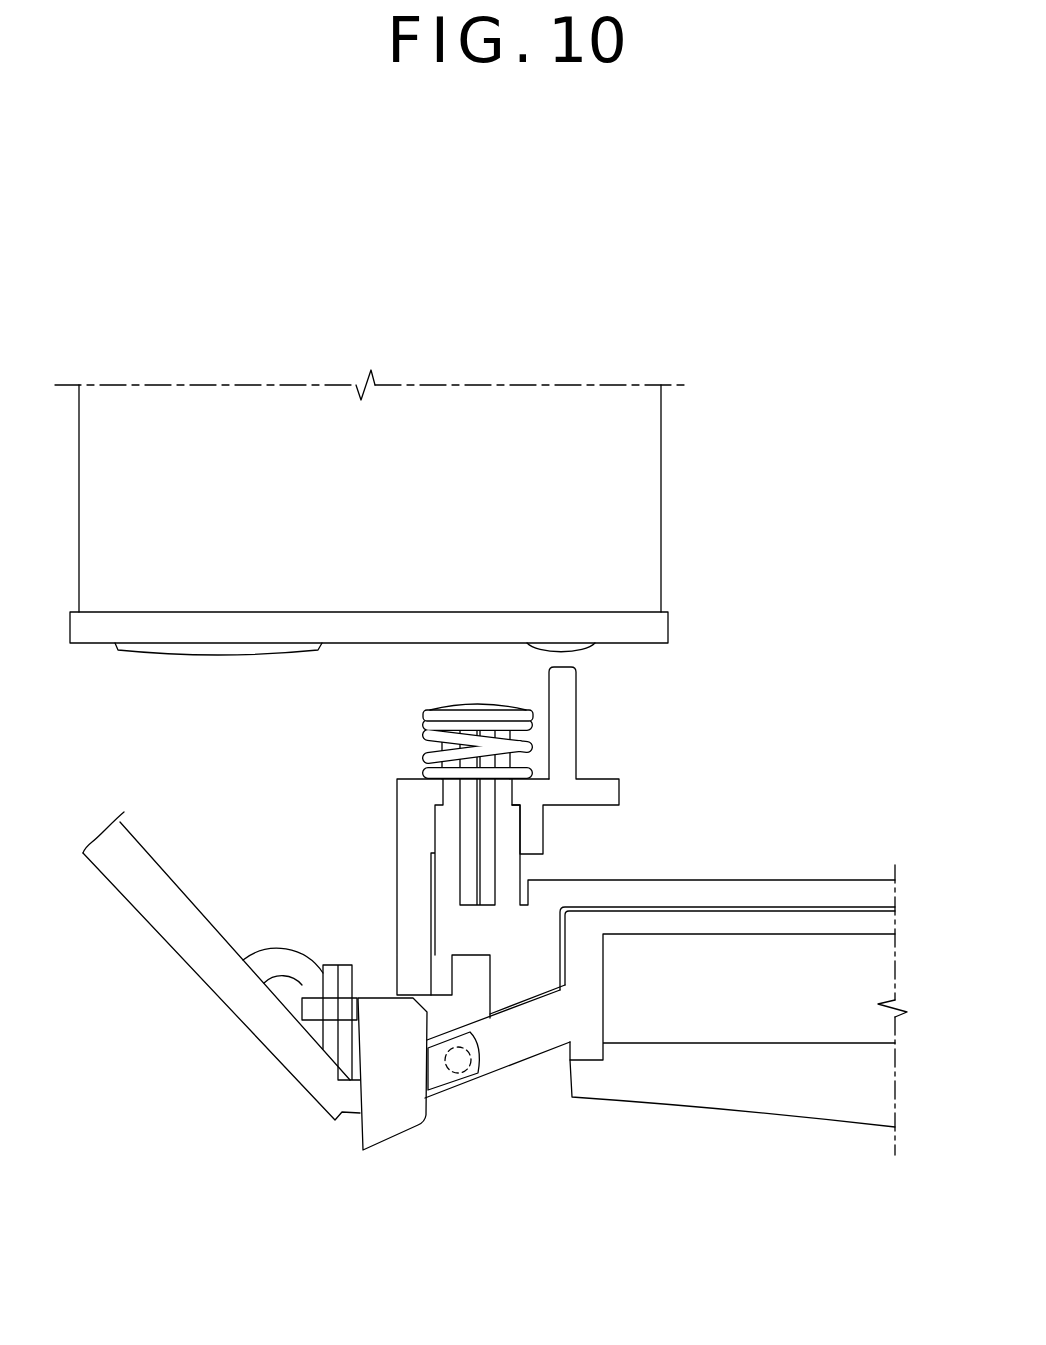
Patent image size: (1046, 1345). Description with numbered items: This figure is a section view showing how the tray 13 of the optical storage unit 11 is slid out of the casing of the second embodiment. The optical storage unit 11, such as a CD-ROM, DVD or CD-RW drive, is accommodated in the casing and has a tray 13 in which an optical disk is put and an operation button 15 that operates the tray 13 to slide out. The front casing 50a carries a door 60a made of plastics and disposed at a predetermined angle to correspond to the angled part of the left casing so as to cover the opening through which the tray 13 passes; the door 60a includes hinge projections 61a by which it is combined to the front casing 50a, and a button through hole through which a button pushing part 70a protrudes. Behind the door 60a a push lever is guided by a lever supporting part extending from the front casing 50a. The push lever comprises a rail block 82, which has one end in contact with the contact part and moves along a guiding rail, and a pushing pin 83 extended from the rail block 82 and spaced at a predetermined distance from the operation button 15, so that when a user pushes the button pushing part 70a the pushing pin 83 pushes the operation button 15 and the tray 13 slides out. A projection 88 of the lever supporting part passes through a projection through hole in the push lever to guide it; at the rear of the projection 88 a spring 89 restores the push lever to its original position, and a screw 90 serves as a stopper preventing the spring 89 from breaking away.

The optical storage unit 11 is at (135, 547).
The tray 13 is at (205, 652).
The operation button 15 is at (585, 648).
The front casing 50a is at (637, 1097).
The door 60a is at (283, 1055).
The hinge projections 61a is at (478, 1074).
The button pushing part 70a is at (397, 1128).
The rail block 82 is at (408, 906).
The pushing pin 83 is at (568, 710).
The projection 88 is at (450, 829).
The spring 89 is at (430, 753).
The screw 90 is at (440, 703).